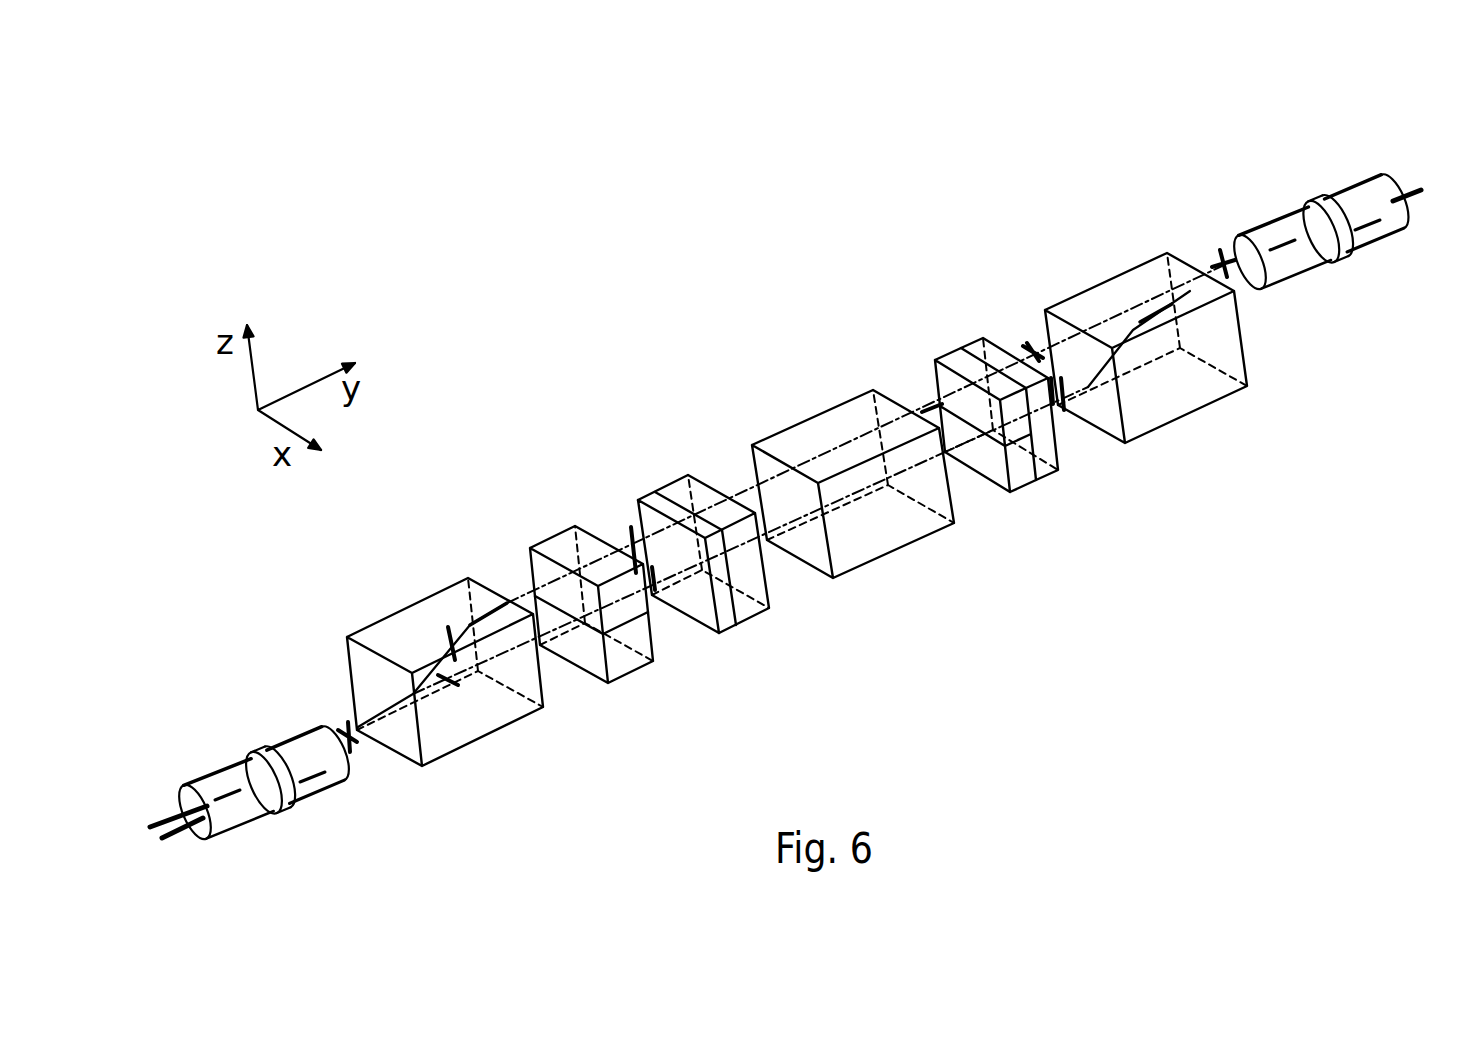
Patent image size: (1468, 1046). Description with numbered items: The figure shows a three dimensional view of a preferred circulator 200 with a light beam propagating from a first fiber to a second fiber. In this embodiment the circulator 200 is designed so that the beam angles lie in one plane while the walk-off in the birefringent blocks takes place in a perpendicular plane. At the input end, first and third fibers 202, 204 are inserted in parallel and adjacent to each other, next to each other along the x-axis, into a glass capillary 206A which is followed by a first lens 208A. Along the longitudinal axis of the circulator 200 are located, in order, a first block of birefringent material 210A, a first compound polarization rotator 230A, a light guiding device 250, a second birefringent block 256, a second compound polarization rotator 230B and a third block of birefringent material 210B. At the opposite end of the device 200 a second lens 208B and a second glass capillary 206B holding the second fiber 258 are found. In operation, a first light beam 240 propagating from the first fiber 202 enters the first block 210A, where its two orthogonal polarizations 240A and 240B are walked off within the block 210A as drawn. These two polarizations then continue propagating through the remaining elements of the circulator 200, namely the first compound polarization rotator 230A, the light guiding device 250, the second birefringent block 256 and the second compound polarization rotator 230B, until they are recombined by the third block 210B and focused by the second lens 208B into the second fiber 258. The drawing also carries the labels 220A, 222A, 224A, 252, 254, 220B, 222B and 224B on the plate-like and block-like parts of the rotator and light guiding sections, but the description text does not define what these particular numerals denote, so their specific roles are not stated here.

The circulator 200 is at (689, 192).
The first fiber 202 is at (185, 838).
The third fiber 204 is at (155, 800).
The glass capillary 206A is at (228, 757).
The first lens 208A is at (312, 795).
The first light beam 240 is at (352, 748).
The first block of birefringent material 210A is at (398, 600).
The first orthogonal polarization 240A is at (480, 688).
The second orthogonal polarization 240B is at (447, 640).
The first polarization rotator assembly 220A is at (523, 566).
The first half-wave plate pair 222A is at (585, 690).
The first wave plate 224A is at (648, 666).
The first compound polarization rotator 230A is at (545, 488).
The front wave plate section 252 is at (644, 495).
The rear wave plate section 254 is at (755, 618).
The light guiding device 250 is at (708, 438).
The second birefringent block 256 is at (821, 412).
The second polarization rotator assembly 220B is at (935, 362).
The second half-wave plate pair 222B is at (1002, 494).
The second wave plate 224B is at (982, 340).
The second compound polarization rotator 230B is at (1087, 502).
The third block of birefringent material 210B is at (1197, 412).
The second lens 208B is at (1262, 217).
The second glass capillary 206B is at (1337, 183).
The second fiber 258 is at (1415, 195).